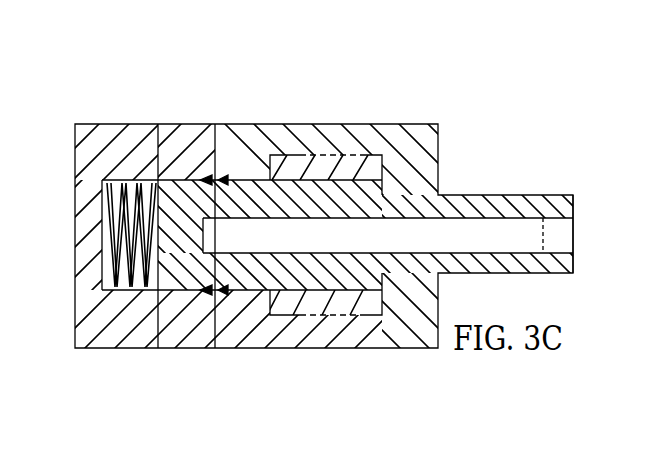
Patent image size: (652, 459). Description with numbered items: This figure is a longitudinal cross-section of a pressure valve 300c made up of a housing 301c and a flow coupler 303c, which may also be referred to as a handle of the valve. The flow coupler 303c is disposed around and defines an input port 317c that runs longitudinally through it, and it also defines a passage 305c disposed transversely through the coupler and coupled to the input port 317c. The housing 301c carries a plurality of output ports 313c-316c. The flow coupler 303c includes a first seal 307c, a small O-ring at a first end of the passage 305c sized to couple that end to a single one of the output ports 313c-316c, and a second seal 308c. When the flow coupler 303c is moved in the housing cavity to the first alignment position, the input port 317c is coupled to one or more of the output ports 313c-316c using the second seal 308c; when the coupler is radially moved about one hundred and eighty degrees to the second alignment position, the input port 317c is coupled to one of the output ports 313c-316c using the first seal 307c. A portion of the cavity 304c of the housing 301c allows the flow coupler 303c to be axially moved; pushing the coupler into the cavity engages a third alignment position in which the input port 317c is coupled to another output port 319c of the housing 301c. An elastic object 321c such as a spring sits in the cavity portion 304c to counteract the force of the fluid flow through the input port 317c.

The pressure valve 300c is at (293, 52).
The housing 301c is at (112, 124).
The flow coupler 303c is at (358, 178).
The portion of the cavity 304c is at (115, 186).
The passage 305c is at (220, 262).
The first seal 307c is at (203, 295).
The second seal 308c is at (226, 163).
The plurality of output ports 313c-316c is at (218, 114).
The input port 317c is at (526, 238).
The other output port 319c is at (155, 114).
The elastic object 321c is at (115, 278).